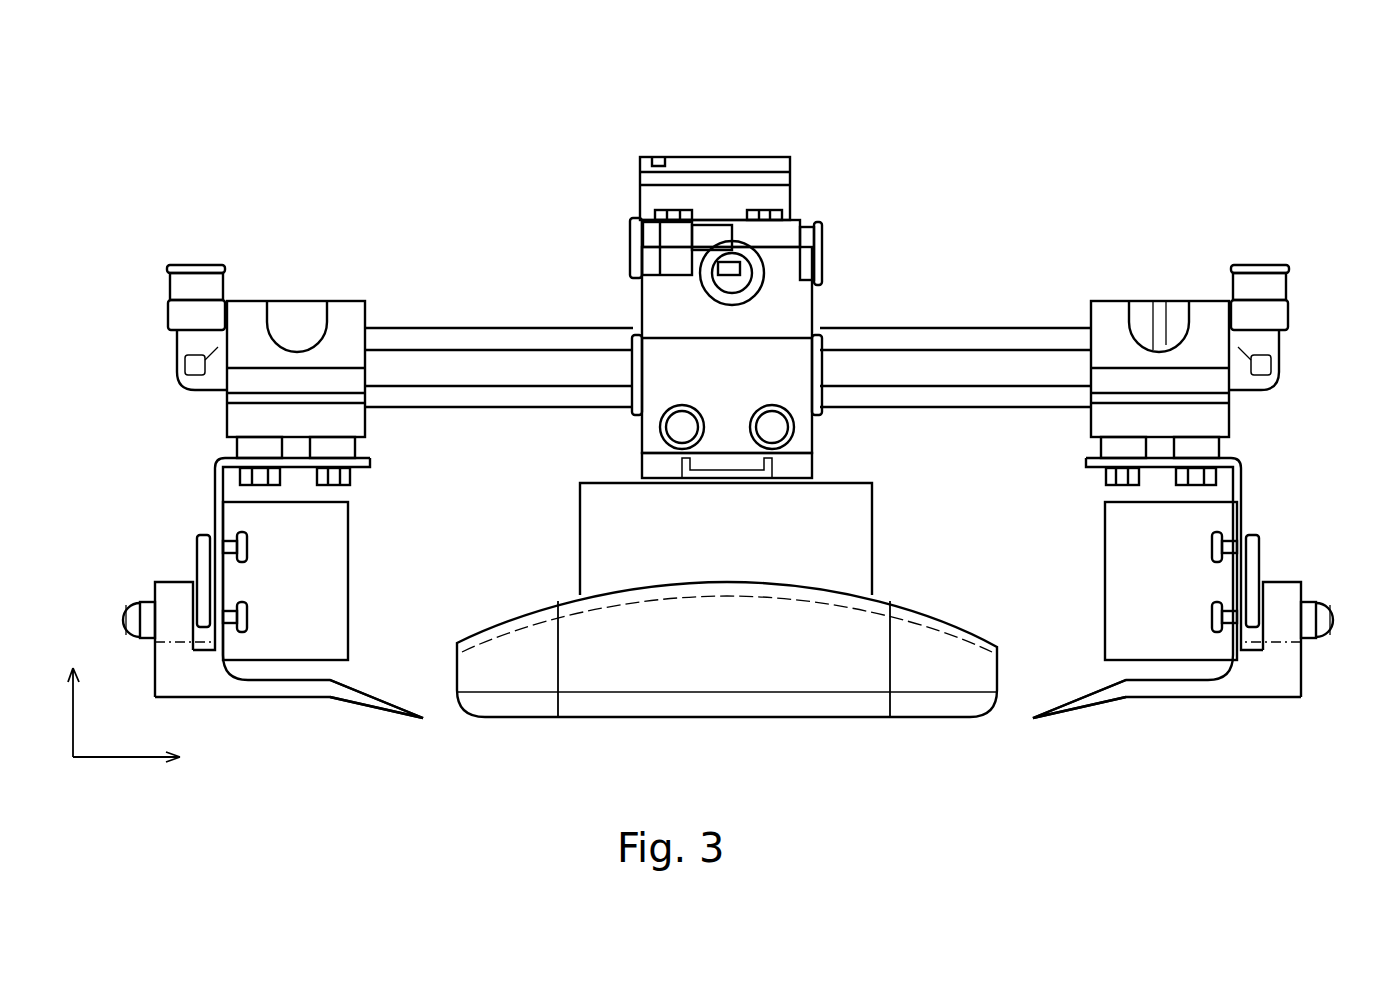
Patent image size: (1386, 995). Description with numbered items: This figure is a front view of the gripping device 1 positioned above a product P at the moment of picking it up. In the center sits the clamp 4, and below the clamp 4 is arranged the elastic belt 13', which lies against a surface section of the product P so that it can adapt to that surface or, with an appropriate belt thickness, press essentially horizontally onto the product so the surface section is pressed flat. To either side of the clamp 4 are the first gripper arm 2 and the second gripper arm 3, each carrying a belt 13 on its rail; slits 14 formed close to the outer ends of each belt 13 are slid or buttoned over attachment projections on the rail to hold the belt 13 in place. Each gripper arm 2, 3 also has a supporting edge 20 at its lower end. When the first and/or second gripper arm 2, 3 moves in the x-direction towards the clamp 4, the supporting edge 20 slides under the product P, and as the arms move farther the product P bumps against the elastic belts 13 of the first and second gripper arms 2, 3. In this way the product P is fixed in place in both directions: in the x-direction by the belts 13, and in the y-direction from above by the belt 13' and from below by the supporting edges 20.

The gripping device 1 is at (852, 140).
The first gripper arm 2 is at (288, 233).
The second gripper arm 3 is at (1177, 226).
The clamp 4 is at (773, 328).
The belt 13 is at (730, 581).
The elastic belt 13' is at (726, 539).
The slits 14 is at (1215, 545).
The supporting edge 20 is at (290, 686).
The product P is at (716, 656).